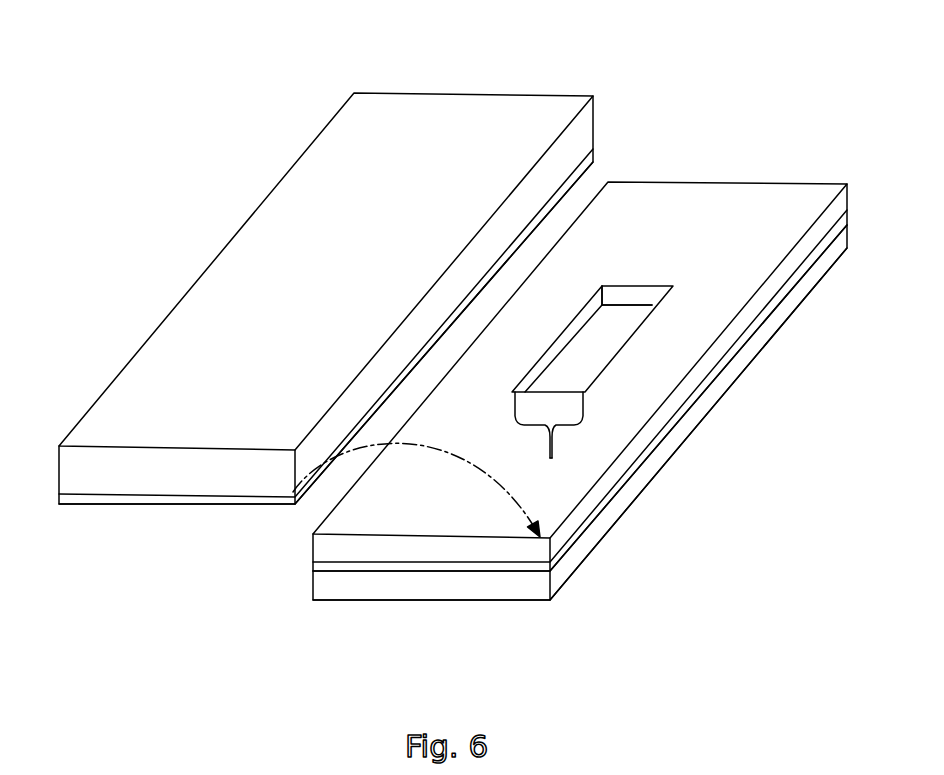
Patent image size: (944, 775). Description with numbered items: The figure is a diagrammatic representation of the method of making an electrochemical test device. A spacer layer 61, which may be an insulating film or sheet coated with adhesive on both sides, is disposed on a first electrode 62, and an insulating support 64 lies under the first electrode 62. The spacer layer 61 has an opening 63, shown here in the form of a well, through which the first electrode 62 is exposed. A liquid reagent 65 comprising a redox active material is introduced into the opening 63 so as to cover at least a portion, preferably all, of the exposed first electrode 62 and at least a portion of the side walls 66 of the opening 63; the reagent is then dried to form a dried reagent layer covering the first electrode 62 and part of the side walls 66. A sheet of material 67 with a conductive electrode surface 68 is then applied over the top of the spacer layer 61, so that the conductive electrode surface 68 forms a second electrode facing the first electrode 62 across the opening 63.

The spacer layer 61 is at (595, 443).
The first electrode 62 is at (572, 362).
The opening 63 is at (550, 458).
The insulating support 64 is at (503, 585).
The liquid reagent 65 is at (608, 325).
The side walls 66 is at (570, 330).
The sheet of material 67 is at (326, 298).
The conductive electrode surface 68 is at (177, 495).